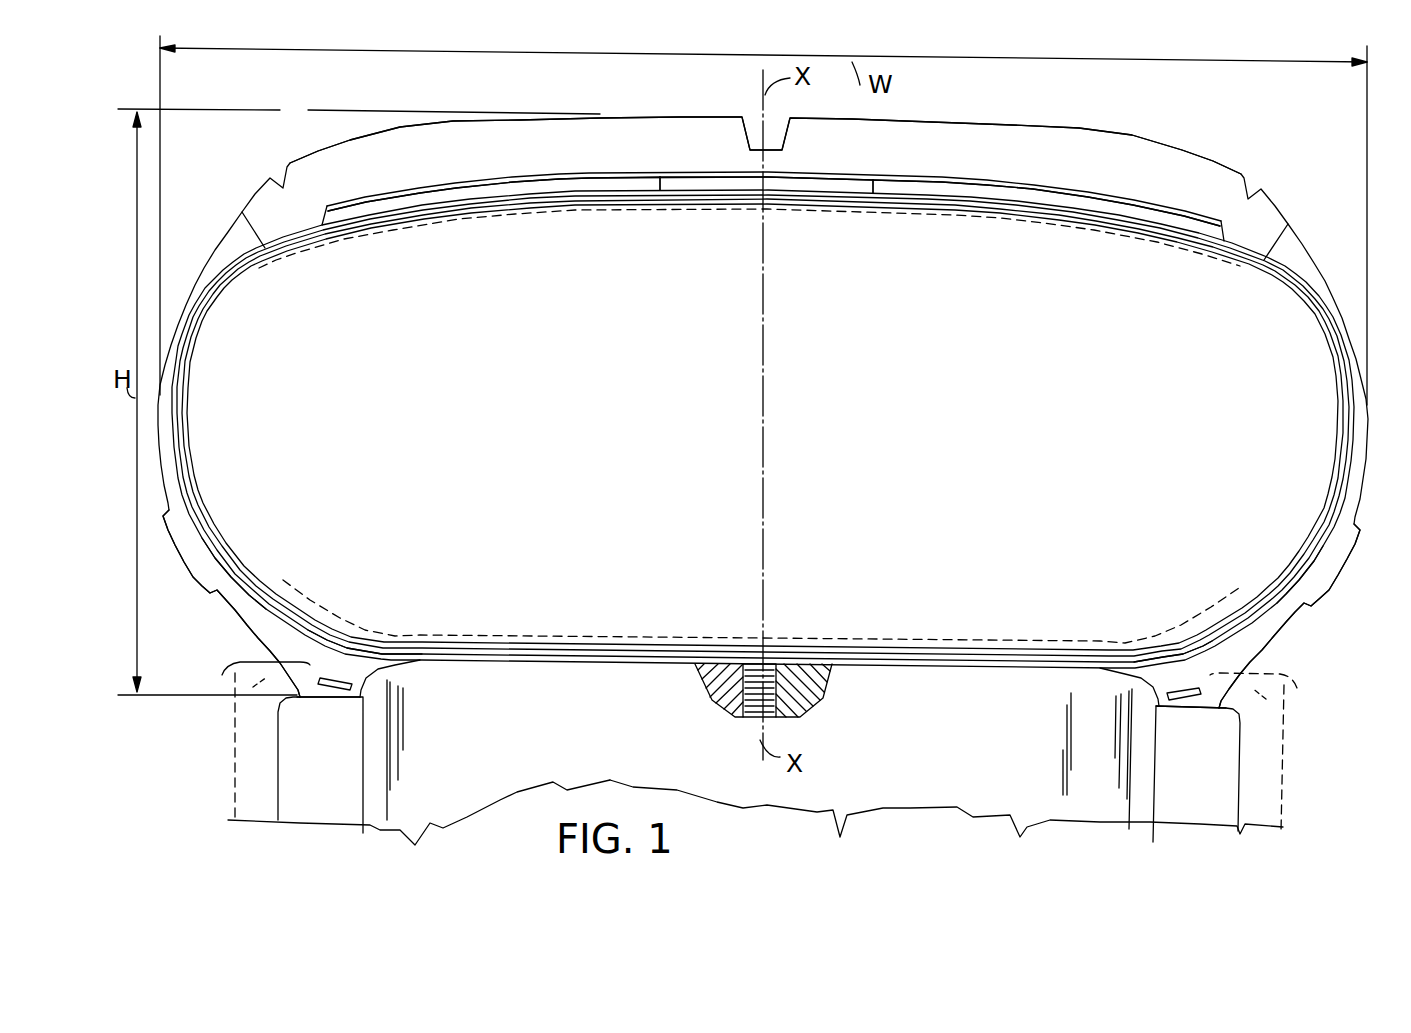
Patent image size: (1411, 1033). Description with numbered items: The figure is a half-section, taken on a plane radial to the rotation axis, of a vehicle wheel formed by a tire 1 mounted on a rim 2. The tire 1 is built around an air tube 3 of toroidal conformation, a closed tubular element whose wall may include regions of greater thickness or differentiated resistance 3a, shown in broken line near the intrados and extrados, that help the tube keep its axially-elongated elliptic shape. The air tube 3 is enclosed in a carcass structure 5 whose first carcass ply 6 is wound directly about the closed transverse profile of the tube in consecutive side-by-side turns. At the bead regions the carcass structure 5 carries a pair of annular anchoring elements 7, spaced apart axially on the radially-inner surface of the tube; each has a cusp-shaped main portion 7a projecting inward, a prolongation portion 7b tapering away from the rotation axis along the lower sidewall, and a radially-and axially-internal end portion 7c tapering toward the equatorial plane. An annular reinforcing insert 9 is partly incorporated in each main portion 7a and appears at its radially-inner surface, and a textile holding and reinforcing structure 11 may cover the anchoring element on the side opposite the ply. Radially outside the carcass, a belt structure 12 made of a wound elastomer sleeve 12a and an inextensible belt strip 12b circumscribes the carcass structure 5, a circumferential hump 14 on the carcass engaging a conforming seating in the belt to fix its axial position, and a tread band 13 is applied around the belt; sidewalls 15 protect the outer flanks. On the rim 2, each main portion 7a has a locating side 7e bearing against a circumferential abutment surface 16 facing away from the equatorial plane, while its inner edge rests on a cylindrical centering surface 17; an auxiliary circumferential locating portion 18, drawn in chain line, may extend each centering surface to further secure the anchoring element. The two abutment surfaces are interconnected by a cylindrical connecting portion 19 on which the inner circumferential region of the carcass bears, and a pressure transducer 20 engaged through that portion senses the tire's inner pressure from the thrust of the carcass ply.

The tire 1 is at (763, 392).
The rim 2 is at (315, 825).
The air tube 3 is at (405, 642).
The regions of greater thickness and/or differentiated resistance 3a is at (547, 210).
The carcass structure 5 is at (273, 240).
The first carcass ply 6 is at (303, 233).
The annular anchoring element 7 is at (310, 613).
The main portion 7a is at (230, 668).
The prolongation portion 7b is at (232, 567).
The radially-and axially-internal end portion 7c is at (383, 648).
The locating side 7e is at (440, 660).
The annular reinforcing insert 9 is at (332, 683).
The textile holding and reinforcing structure 11 is at (230, 268).
The belt structure 12 is at (1142, 213).
The sleeve of elastomer material 12a is at (540, 183).
The inextensible belt strip 12b is at (648, 172).
The tread band 13 is at (1030, 135).
The circumferential hump 14 is at (677, 183).
The sidewall 15 is at (175, 530).
The circumferential abutment surface 16 is at (372, 793).
The cylindrical centering surface 17 is at (383, 702).
The auxiliary circumferential locating portion 18 is at (222, 715).
The cylindrical connecting portion 19 is at (900, 783).
The pressure transducer 20 is at (763, 653).